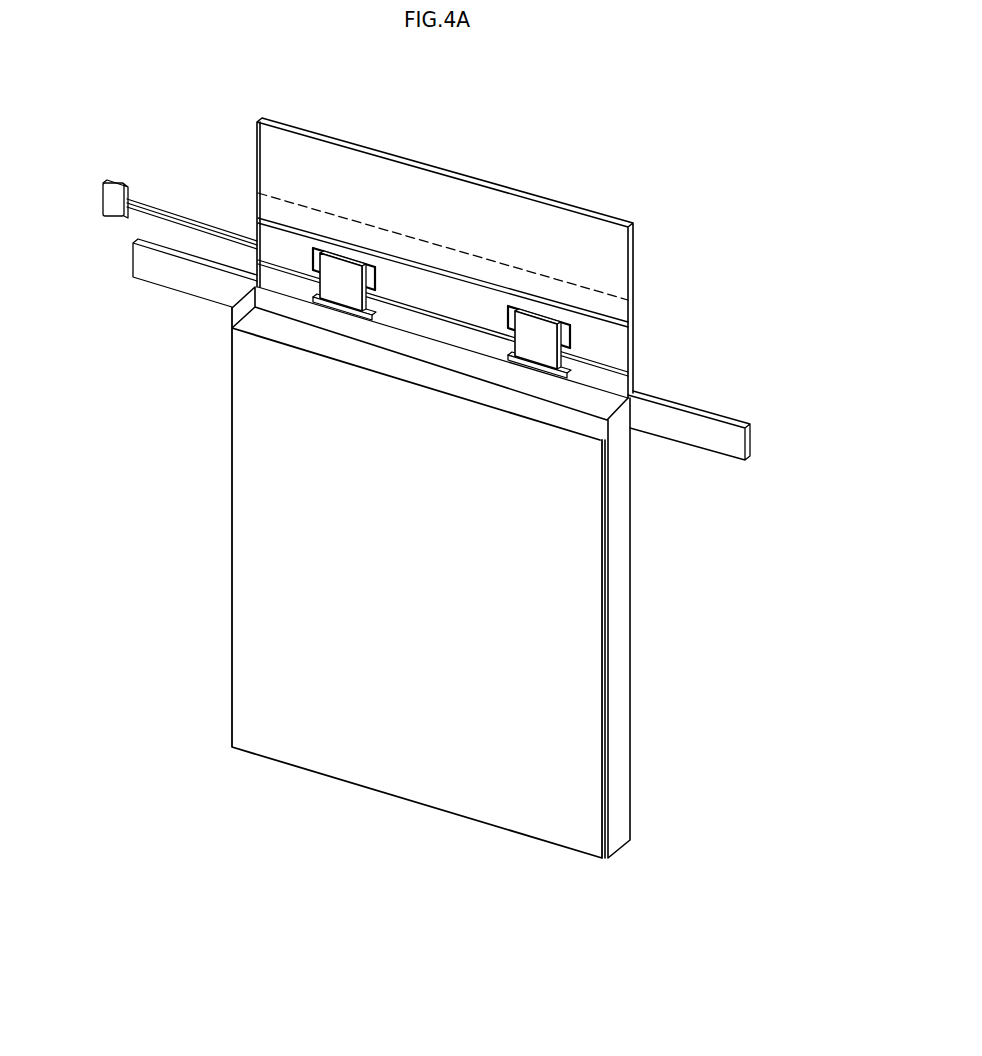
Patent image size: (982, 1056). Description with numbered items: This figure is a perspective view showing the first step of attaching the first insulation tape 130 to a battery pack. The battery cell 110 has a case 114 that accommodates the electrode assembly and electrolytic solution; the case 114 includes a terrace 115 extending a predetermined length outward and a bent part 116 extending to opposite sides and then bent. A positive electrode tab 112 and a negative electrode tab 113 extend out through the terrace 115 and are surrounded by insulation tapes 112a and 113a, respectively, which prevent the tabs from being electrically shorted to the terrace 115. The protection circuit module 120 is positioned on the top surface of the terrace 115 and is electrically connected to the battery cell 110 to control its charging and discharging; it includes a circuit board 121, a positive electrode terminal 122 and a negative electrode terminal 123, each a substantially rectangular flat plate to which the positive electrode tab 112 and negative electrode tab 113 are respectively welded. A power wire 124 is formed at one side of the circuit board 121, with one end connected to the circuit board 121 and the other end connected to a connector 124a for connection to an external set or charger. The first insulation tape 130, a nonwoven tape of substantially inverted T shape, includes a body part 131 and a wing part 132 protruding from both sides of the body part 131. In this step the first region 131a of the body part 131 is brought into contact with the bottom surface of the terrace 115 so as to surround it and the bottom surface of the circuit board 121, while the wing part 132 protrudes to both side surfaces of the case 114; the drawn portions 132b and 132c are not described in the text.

The battery cell 110 is at (469, 595).
The positive electrode tab 112 is at (338, 268).
The insulation tape 112a is at (306, 280).
The negative electrode tab 113 is at (530, 327).
The insulation tape 113a is at (503, 335).
The case 114 is at (397, 782).
The terrace 115 is at (605, 405).
The bent part 116 is at (622, 577).
The protection circuit module 120 is at (424, 231).
The circuit board 121 is at (423, 284).
The positive electrode terminal 122 is at (378, 262).
The negative electrode terminal 123 is at (562, 323).
The power wire 124 is at (156, 207).
The connector 124a is at (113, 210).
The first insulation tape 130 is at (485, 339).
The body part 131 is at (515, 308).
The first region 131a is at (620, 378).
The wing part 132 is at (725, 433).
The upper strip 132b is at (620, 279).
The lower strip 132c is at (620, 313).